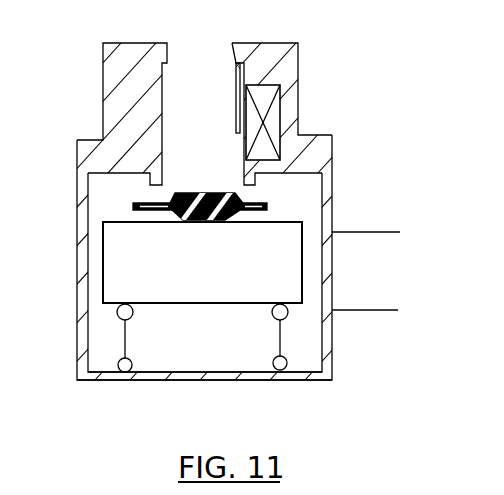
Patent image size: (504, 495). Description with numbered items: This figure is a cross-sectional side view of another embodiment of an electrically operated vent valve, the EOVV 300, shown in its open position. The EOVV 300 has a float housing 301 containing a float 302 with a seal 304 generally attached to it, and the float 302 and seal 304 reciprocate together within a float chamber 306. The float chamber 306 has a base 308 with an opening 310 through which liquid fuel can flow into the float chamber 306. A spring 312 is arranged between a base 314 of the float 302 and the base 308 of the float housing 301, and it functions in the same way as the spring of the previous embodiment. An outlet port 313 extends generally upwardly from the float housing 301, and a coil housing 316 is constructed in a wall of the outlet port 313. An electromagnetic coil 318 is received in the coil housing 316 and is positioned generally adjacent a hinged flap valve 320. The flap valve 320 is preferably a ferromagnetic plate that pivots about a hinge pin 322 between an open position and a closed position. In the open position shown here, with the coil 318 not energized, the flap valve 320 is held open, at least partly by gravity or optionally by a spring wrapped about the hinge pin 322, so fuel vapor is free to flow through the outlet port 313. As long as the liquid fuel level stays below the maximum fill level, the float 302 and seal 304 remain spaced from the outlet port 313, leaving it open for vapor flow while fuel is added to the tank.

The EOVV 300 is at (252, 225).
The float housing 301 is at (336, 350).
The float 302 is at (103, 247).
The seal 304 is at (140, 207).
The float chamber 306 is at (95, 280).
The base 308 is at (98, 378).
The opening 310 is at (190, 378).
The spring 312 is at (125, 339).
The outlet port 313 is at (163, 131).
The base of the float 314 is at (167, 303).
The coil housing 316 is at (265, 100).
The electromagnetic coil 318 is at (282, 118).
The hinged flap valve 320 is at (237, 97).
The hinge pin 322 is at (242, 64).